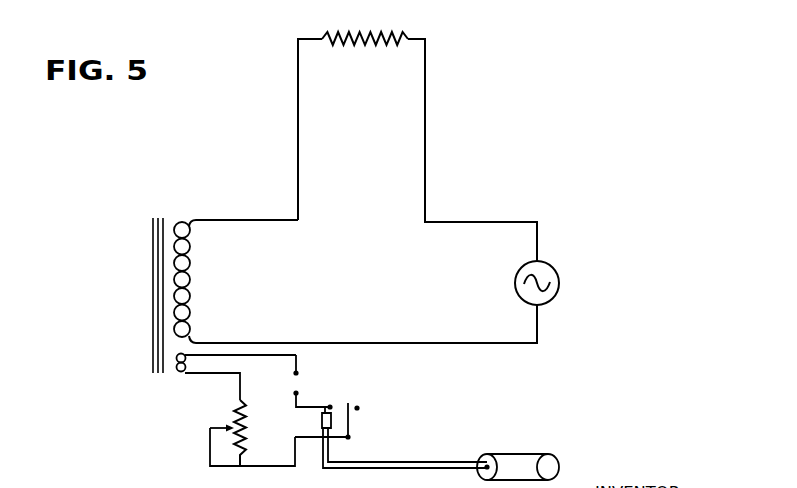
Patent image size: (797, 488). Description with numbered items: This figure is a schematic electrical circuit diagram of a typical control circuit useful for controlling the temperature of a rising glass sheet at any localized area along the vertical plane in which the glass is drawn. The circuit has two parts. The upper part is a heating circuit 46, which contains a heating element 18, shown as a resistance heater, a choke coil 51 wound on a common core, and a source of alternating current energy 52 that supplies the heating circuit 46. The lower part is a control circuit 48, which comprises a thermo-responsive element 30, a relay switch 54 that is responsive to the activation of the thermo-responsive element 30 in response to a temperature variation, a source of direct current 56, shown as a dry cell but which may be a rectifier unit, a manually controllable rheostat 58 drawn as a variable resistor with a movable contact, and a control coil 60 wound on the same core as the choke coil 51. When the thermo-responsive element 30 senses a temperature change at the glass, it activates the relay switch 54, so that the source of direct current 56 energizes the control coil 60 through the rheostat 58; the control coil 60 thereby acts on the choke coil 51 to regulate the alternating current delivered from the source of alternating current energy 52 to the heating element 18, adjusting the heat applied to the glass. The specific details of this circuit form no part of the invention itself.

The heating element 18 is at (331, 37).
The heating circuit 46 is at (437, 204).
The choke coil 51 is at (189, 272).
The source of alternating current energy 52 is at (559, 279).
The source of direct current 56 is at (300, 380).
The relay switch 54 is at (348, 402).
The control circuit 48 is at (368, 406).
The control coil 60 is at (176, 371).
The rheostat 58 is at (237, 415).
The thermo-responsive element 30 is at (502, 455).